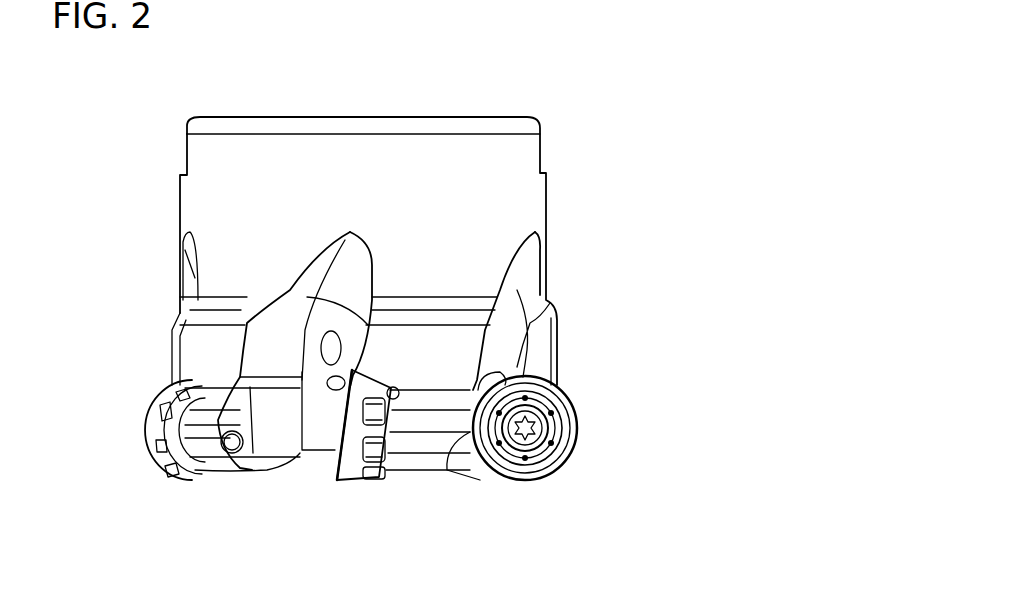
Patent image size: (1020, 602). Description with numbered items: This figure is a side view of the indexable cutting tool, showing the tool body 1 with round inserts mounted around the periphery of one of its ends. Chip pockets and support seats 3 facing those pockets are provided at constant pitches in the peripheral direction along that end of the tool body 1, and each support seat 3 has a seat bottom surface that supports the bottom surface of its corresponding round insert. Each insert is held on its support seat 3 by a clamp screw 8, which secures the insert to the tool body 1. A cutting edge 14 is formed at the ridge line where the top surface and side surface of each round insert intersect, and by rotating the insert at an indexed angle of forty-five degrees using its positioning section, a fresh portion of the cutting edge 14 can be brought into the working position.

The tool body 1 is at (560, 144).
The support seat 3 is at (372, 478).
The clamp screw 8 is at (545, 432).
The cutting edge 14 is at (578, 421).